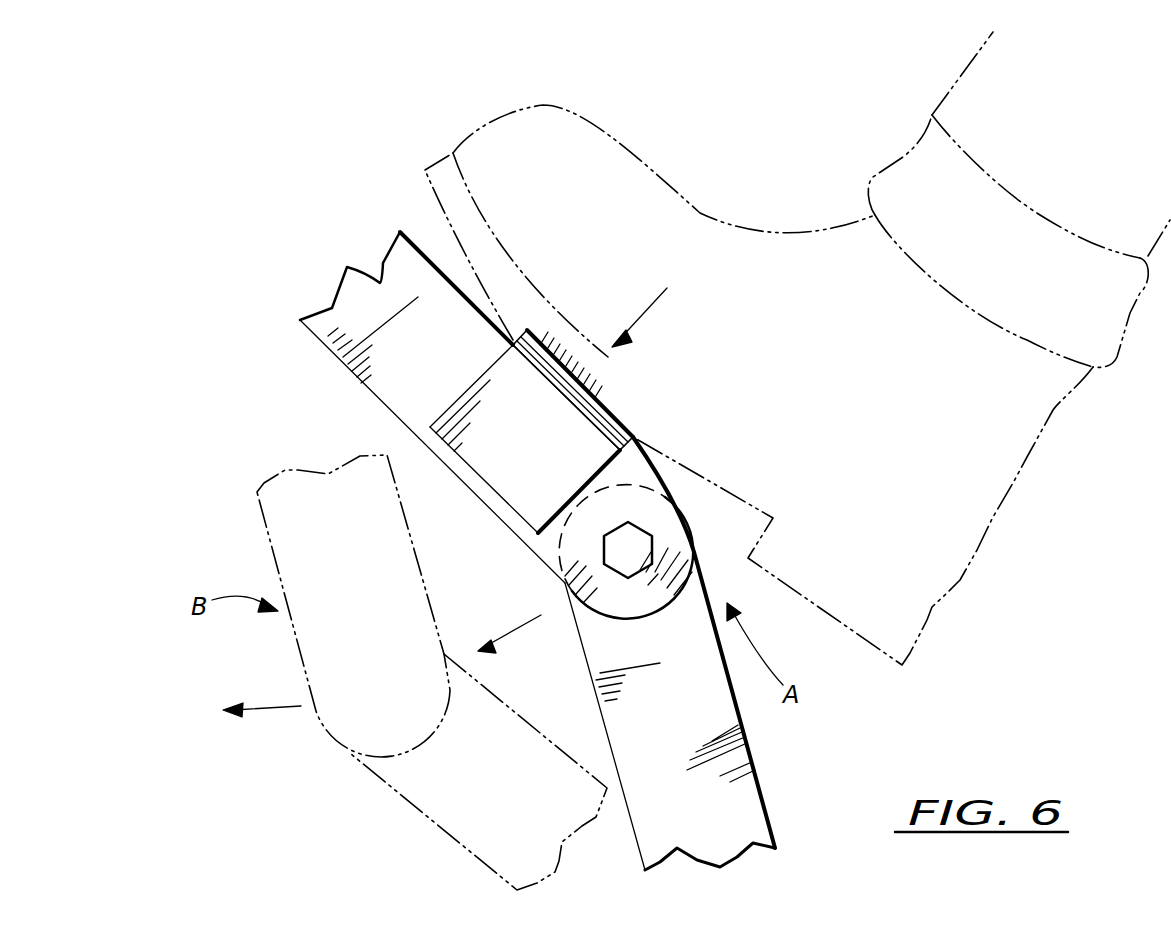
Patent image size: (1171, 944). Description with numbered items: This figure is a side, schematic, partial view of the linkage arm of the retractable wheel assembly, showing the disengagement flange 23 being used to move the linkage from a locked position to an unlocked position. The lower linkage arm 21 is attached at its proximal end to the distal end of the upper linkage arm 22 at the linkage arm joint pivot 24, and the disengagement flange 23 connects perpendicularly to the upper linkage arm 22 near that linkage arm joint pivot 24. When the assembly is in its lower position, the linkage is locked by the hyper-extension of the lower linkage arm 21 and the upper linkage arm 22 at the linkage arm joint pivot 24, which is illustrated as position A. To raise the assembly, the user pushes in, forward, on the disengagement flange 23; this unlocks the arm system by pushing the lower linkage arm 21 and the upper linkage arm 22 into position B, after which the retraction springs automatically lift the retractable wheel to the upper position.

The lower linkage arm 21 is at (723, 810).
The upper linkage arm 22 is at (380, 282).
The disengagement flange 23 is at (600, 413).
The linkage arm joint pivot 24 is at (630, 545).